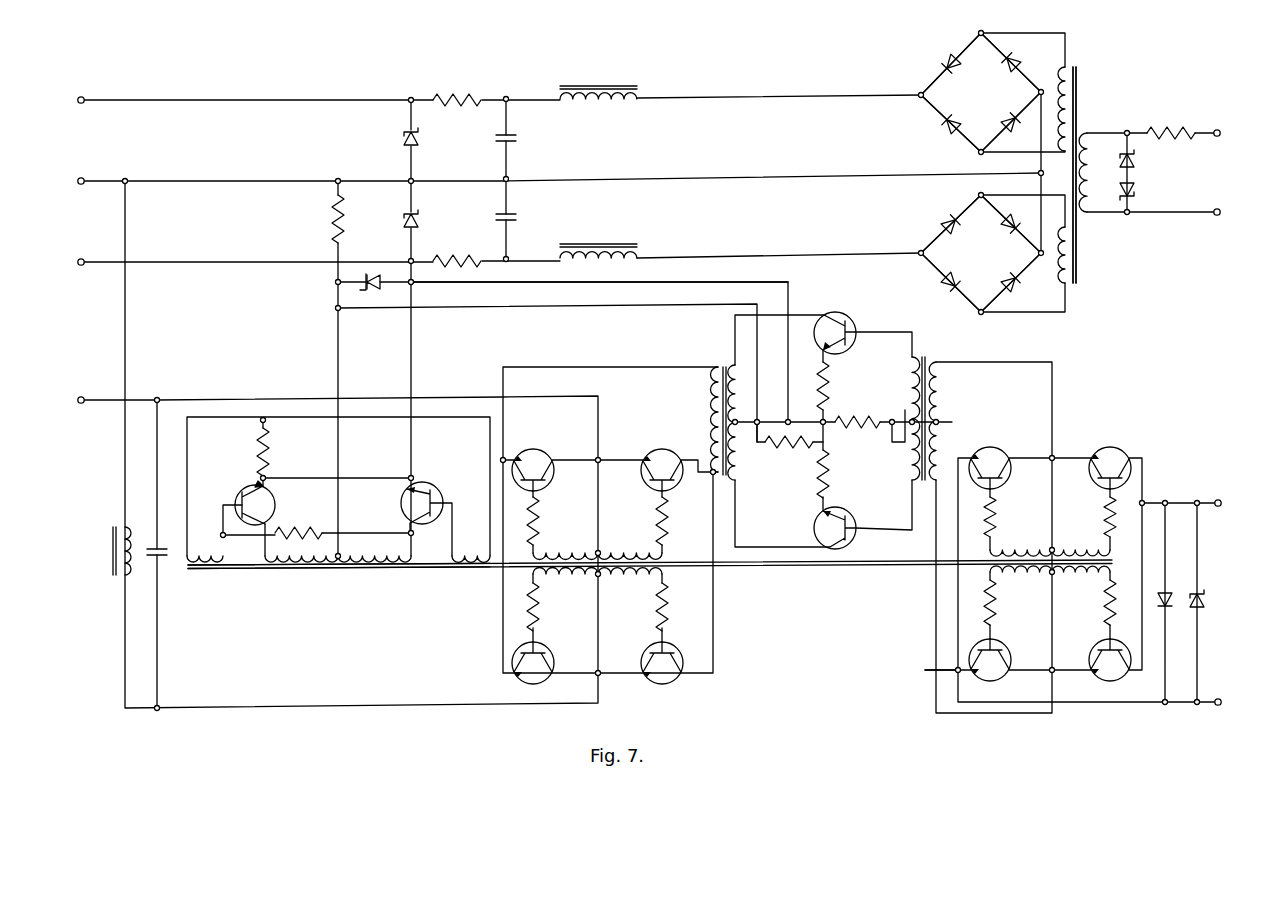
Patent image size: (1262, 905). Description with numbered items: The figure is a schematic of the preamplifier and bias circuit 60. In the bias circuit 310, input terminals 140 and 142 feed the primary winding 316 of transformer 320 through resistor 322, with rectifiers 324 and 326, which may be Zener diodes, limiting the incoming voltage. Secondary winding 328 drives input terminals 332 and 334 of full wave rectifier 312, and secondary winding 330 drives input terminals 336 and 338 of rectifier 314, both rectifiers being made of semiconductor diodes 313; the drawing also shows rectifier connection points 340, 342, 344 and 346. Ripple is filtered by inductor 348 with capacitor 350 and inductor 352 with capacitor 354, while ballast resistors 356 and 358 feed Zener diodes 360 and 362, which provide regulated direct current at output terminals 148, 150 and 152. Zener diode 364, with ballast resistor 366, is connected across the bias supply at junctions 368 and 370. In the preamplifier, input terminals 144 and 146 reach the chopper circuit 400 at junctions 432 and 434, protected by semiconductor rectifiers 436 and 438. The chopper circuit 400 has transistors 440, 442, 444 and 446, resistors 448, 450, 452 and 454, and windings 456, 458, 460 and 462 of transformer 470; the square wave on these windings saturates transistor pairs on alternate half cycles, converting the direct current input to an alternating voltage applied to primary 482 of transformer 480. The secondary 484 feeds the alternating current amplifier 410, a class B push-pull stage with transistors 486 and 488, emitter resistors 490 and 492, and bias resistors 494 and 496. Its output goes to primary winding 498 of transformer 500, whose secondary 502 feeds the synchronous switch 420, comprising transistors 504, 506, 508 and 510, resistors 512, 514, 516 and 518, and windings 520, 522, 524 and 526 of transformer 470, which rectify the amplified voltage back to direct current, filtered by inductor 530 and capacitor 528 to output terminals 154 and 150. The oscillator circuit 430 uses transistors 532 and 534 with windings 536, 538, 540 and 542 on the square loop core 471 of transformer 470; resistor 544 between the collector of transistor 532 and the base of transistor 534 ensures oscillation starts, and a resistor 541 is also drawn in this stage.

The preamplifier and bias circuit 60 is at (691, 701).
The input terminal 140 is at (1217, 130).
The input terminal 142 is at (1217, 216).
The input terminal 144 is at (1217, 500).
The input terminal 146 is at (1218, 704).
The output terminal 148 is at (81, 100).
The output terminal 150 is at (81, 181).
The output terminal 152 is at (81, 262).
The output terminal 154 is at (81, 400).
The bias circuit 310 is at (621, 136).
The rectifier 312 is at (981, 92).
The semiconductor diodes 313 is at (946, 56).
The rectifier 314 is at (981, 253).
The primary winding 316 is at (1087, 188).
The transformer 320 is at (955, 342).
The resistor 322 is at (1160, 130).
The rectifier 324 is at (1136, 160).
The rectifier 326 is at (1136, 189).
The secondary winding 328 is at (1070, 70).
The secondary winding 330 is at (1068, 282).
The input terminal 332 is at (982, 32).
The input terminal 334 is at (977, 152).
The input terminal 336 is at (976, 194).
The input terminal 338 is at (978, 314).
The bridge input terminal 340 is at (918, 92).
The bridge input terminal 342 is at (1040, 90).
The bridge input terminal 344 is at (920, 251).
The bridge input terminal 346 is at (1043, 260).
The inductor 348 is at (568, 90).
The capacitor 350 is at (514, 138).
The inductor 352 is at (592, 256).
The capacitor 354 is at (514, 216).
The ballast resistor 356 is at (480, 98).
The ballast resistor 358 is at (481, 260).
The Zener diode 360 is at (403, 138).
The Zener diode 362 is at (404, 220).
The Zener diode 364 is at (385, 288).
The ballast resistor 366 is at (332, 220).
The junction 368 is at (334, 283).
The junction 370 is at (414, 286).
The chopper circuit 400 is at (1089, 411).
The alternating current amplifier 410 is at (867, 376).
The synchronous switch 420 is at (625, 414).
The oscillator circuit 430 is at (379, 433).
The junction 432 is at (1144, 503).
The junction 434 is at (922, 676).
The semiconductor rectifier 436 is at (1172, 600).
The semiconductor rectifier 438 is at (1200, 612).
The transistor 440 is at (984, 448).
The transistor 442 is at (1104, 448).
The transistor 444 is at (1010, 660).
The transistor 446 is at (1094, 676).
The resistor 448 is at (995, 514).
The resistor 450 is at (1104, 514).
The resistor 452 is at (997, 612).
The resistor 454 is at (1104, 614).
The winding 456 is at (999, 552).
The winding 458 is at (1101, 552).
The winding 460 is at (998, 577).
The winding 462 is at (1102, 577).
The transformer 470 is at (345, 598).
The core 471 is at (263, 586).
The transformer 480 is at (945, 407).
The primary 482 is at (940, 424).
The secondary 484 is at (909, 410).
The transistor 486 is at (843, 326).
The transistor 488 is at (852, 512).
The resistor 490 is at (833, 378).
The resistor 492 is at (820, 490).
The resistor 494 is at (796, 457).
The resistor 496 is at (878, 435).
The primary winding 498 is at (748, 444).
The transformer 500 is at (708, 405).
The secondary 502 is at (714, 435).
The transistor 504 is at (540, 443).
The transistor 506 is at (652, 452).
The transistor 508 is at (550, 664).
The transistor 510 is at (652, 650).
The resistor 512 is at (538, 520).
The resistor 514 is at (667, 520).
The resistor 516 is at (537, 613).
The resistor 518 is at (665, 613).
The winding 520 is at (584, 540).
The winding 522 is at (650, 540).
The winding 524 is at (584, 575).
The winding 526 is at (606, 574).
The capacitor 528 is at (170, 560).
The inductor 530 is at (121, 578).
The transistor 532 is at (425, 486).
The transistor 534 is at (249, 485).
The winding 536 is at (470, 575).
The winding 538 is at (354, 566).
The winding 540 is at (284, 566).
The resistor 541 is at (271, 454).
The winding 542 is at (208, 566).
The resistor 544 is at (290, 528).